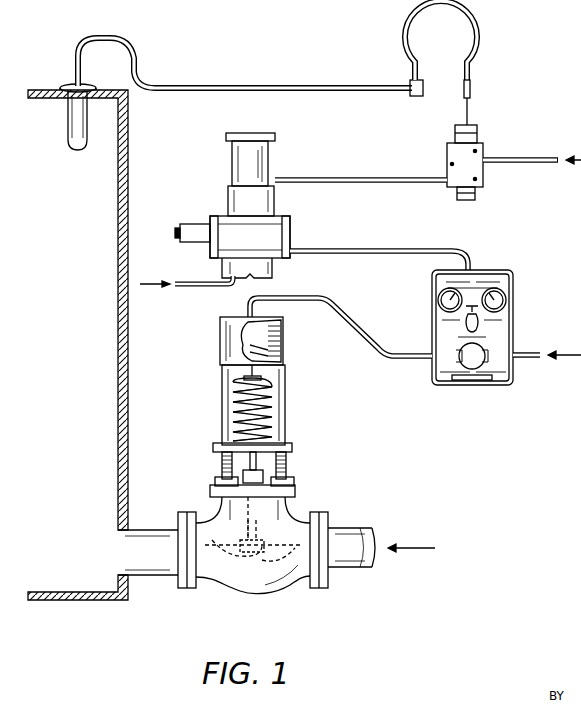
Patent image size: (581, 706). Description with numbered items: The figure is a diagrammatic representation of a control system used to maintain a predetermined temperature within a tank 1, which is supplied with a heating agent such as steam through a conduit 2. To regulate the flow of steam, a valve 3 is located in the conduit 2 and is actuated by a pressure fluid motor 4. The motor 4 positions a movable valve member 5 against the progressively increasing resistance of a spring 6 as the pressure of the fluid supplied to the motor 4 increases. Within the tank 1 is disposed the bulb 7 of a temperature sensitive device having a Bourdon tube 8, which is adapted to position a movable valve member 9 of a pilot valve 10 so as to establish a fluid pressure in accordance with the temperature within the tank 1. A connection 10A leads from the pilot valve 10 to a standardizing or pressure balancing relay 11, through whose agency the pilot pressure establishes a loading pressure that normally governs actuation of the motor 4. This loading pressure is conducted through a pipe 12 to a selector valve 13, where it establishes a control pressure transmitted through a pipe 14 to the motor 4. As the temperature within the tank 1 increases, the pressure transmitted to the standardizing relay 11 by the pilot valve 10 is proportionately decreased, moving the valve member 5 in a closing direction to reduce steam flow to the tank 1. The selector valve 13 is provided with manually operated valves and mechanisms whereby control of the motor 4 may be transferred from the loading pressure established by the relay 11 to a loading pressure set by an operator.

The tank 1 is at (128, 448).
The conduit 2 is at (348, 527).
The valve 3 is at (258, 592).
The pressure fluid motor 4 is at (284, 330).
The movable valve member 5 is at (227, 556).
The spring 6 is at (286, 404).
The bulb 7 is at (76, 150).
The Bourdon tube 8 is at (491, 46).
The movable valve member 9 is at (470, 106).
The pilot valve 10 is at (484, 150).
The tube 10A is at (320, 178).
The standardizing relay 11 is at (290, 228).
The pipe 12 is at (358, 250).
The selector valve 13 is at (513, 283).
The pipe 14 is at (376, 356).